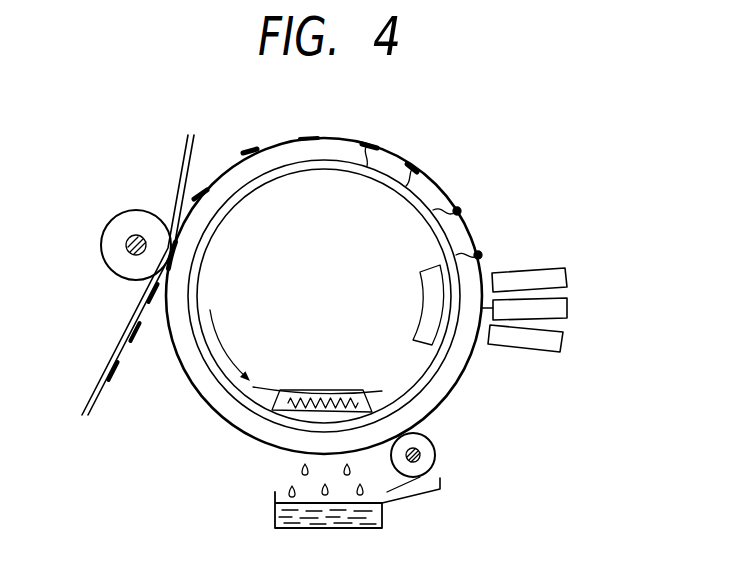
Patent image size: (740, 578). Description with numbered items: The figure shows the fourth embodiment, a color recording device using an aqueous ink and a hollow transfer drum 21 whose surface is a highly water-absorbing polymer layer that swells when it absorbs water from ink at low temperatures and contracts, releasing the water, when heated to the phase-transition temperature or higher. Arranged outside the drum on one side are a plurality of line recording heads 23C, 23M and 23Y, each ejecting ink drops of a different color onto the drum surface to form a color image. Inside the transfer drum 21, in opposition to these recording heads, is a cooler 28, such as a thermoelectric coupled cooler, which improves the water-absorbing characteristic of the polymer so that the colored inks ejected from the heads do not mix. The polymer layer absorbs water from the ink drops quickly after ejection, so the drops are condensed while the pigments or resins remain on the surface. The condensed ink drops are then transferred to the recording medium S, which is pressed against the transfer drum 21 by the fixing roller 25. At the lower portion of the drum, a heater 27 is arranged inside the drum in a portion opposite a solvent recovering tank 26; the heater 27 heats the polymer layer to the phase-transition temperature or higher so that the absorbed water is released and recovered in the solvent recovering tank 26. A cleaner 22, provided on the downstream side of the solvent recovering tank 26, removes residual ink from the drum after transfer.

The transfer drum 21 is at (348, 152).
The fixing roller 25 is at (126, 226).
The recording medium S is at (112, 358).
The cooler 28 is at (432, 300).
The heater 27 is at (335, 393).
The line recording head 23C is at (568, 278).
The line recording head 23M is at (568, 308).
The line recording head 23Y is at (562, 340).
The cleaner 22 is at (436, 448).
The solvent recovering tank 26 is at (275, 523).